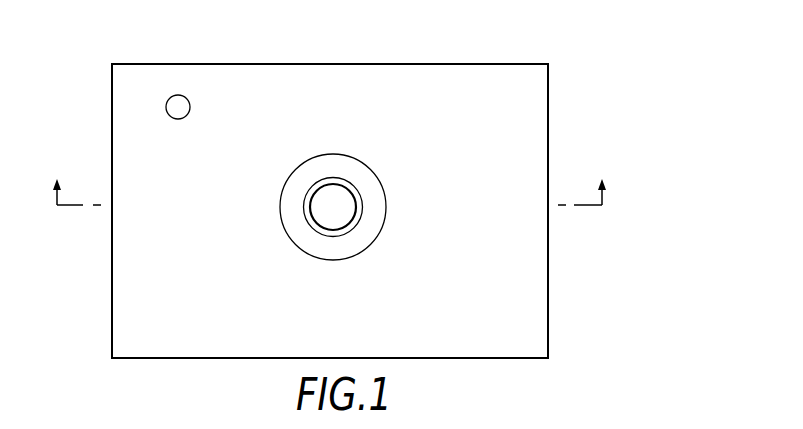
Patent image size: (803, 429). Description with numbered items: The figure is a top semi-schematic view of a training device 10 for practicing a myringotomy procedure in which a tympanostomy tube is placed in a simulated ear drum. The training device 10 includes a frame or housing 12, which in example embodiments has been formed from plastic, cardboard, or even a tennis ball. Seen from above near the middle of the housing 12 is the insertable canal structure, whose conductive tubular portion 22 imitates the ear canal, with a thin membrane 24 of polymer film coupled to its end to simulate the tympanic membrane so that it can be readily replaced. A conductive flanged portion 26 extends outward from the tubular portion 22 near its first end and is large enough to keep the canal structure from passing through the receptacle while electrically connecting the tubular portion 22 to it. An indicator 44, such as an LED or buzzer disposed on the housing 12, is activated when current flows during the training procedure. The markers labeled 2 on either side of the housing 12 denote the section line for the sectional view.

The training device 10 is at (608, 82).
The housing 12 is at (548, 304).
The tubular portion 22 is at (311, 212).
The membrane 24 is at (330, 197).
The flanged portion 26 is at (359, 175).
The indicator 44 is at (188, 113).
The section line 2- 2 is at (326, 223).